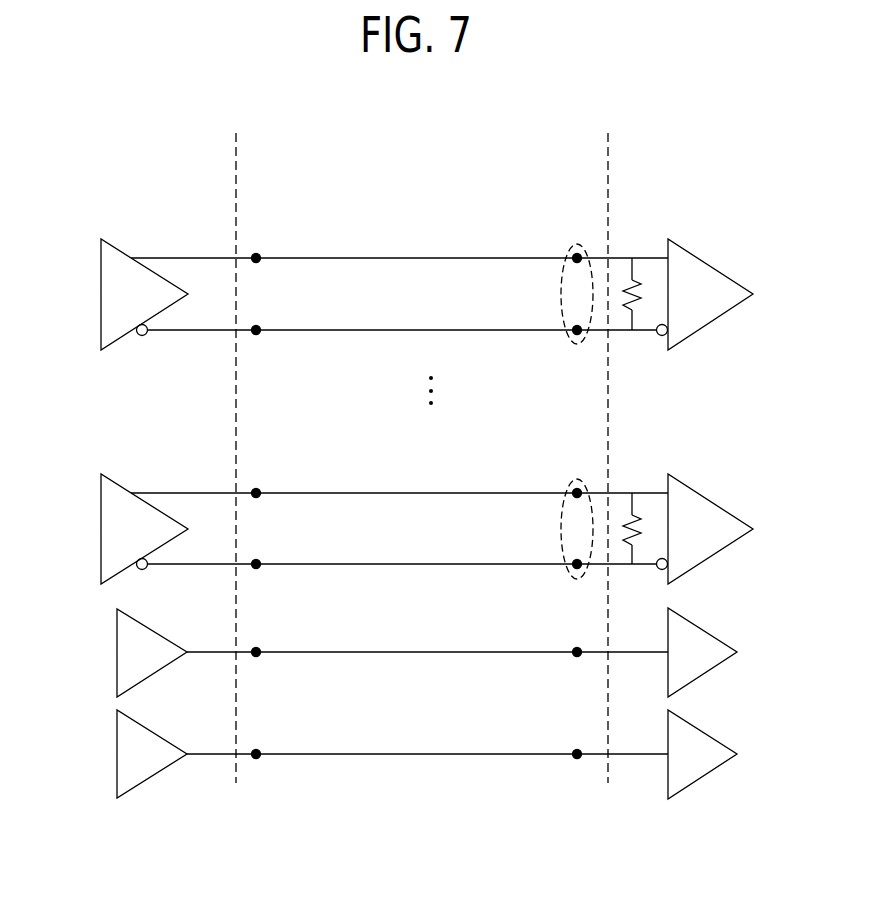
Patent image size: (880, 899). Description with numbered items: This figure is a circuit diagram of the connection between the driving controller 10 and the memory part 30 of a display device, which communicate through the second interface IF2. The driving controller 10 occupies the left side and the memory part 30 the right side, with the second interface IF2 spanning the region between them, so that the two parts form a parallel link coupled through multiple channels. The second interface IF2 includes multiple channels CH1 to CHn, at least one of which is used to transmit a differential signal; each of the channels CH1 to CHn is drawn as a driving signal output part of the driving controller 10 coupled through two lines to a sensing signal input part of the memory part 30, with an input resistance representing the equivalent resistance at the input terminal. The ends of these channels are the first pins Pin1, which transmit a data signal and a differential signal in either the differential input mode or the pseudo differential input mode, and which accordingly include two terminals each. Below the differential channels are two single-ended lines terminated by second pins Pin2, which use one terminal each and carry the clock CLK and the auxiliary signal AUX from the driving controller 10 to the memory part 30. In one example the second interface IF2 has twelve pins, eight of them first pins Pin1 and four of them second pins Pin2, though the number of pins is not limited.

The driving controller 10 is at (236, 143).
The memory part 30 is at (771, 153).
The second interface IF2 is at (236, 143).
The first channel CH1 is at (470, 222).
The n-th channel CHn is at (470, 456).
The first pin Pin1 is at (577, 244).
The second pin Pin2 is at (577, 652).
The clock CLK is at (427, 640).
The auxiliary signal AUX is at (427, 743).